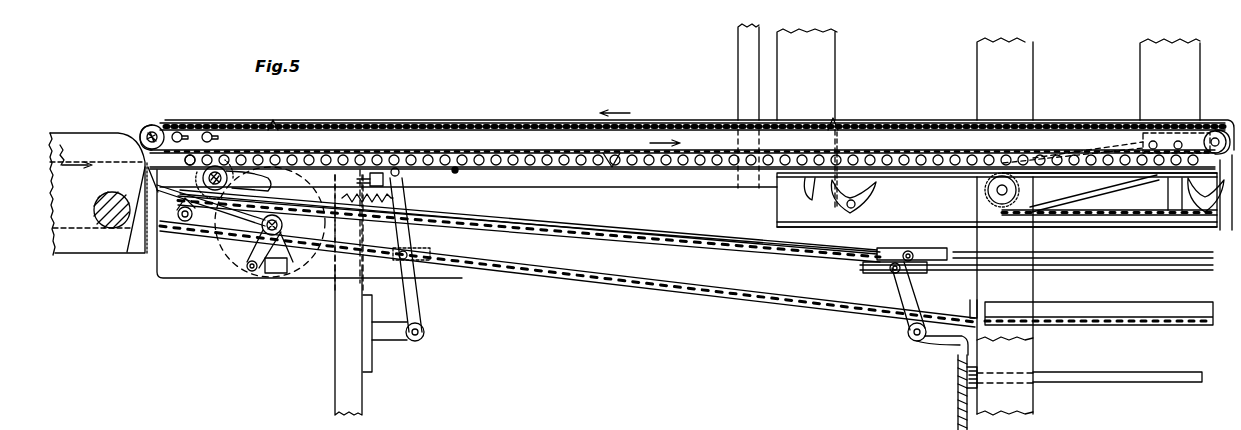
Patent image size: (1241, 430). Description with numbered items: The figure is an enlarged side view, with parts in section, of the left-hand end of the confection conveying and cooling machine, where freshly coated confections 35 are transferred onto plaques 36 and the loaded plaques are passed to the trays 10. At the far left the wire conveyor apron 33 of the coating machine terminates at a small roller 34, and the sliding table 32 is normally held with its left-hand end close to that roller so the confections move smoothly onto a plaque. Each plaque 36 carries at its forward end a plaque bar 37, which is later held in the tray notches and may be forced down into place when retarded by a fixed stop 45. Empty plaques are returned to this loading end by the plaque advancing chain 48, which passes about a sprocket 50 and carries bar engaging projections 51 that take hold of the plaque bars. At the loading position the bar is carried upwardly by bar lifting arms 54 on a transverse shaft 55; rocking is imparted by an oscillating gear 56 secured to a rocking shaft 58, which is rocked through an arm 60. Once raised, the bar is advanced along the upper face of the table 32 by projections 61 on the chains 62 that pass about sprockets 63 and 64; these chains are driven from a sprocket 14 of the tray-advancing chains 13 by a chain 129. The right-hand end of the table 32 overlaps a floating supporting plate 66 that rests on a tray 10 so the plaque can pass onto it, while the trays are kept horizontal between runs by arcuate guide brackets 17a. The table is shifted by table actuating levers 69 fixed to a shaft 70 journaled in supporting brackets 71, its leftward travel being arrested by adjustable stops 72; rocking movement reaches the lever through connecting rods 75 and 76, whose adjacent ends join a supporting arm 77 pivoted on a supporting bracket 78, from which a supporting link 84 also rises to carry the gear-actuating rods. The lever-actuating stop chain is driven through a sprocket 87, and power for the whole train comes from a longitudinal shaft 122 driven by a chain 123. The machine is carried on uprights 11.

The tray 10 is at (918, 177).
The upright 11 is at (335, 371).
The tray-advancing chain 13 is at (1112, 215).
The sprocket 14 is at (1030, 182).
The arcuate guide bracket 17a is at (1187, 190).
The table 32 is at (518, 150).
The wire conveyor apron 33 is at (107, 160).
The roller 34 is at (140, 163).
The confection 35 is at (68, 160).
The plaque 36 is at (548, 158).
The plaque bar 37 is at (627, 168).
The fixed stop 45 is at (1200, 212).
The plaque advancing chain 48 is at (765, 300).
The sprocket 50 is at (172, 230).
The bar engaging projection 51 is at (627, 233).
The bar lifting arm 54 is at (250, 172).
The shaft 55 is at (216, 165).
The gear 56 is at (222, 277).
The rocking shaft 58 is at (297, 283).
The arm 60 is at (278, 277).
The projection 61 is at (275, 120).
The chain 62 is at (673, 123).
The sprocket 63 is at (152, 125).
The sprocket 64 is at (1222, 128).
The supporting plate 66 is at (700, 170).
The table actuating lever 69 is at (418, 295).
The shaft 70 is at (426, 328).
The supporting bracket 71 is at (393, 345).
The adjustable stop 72 is at (377, 173).
The connecting rod 75 is at (533, 233).
The connecting rod 76 is at (1063, 262).
The supporting arm 77 is at (920, 286).
The supporting bracket 78 is at (940, 343).
The supporting link 84 is at (880, 286).
The sprocket 87 is at (458, 172).
The shaft 122 is at (1112, 380).
The chain 123 is at (940, 392).
The chain 129 is at (1103, 140).